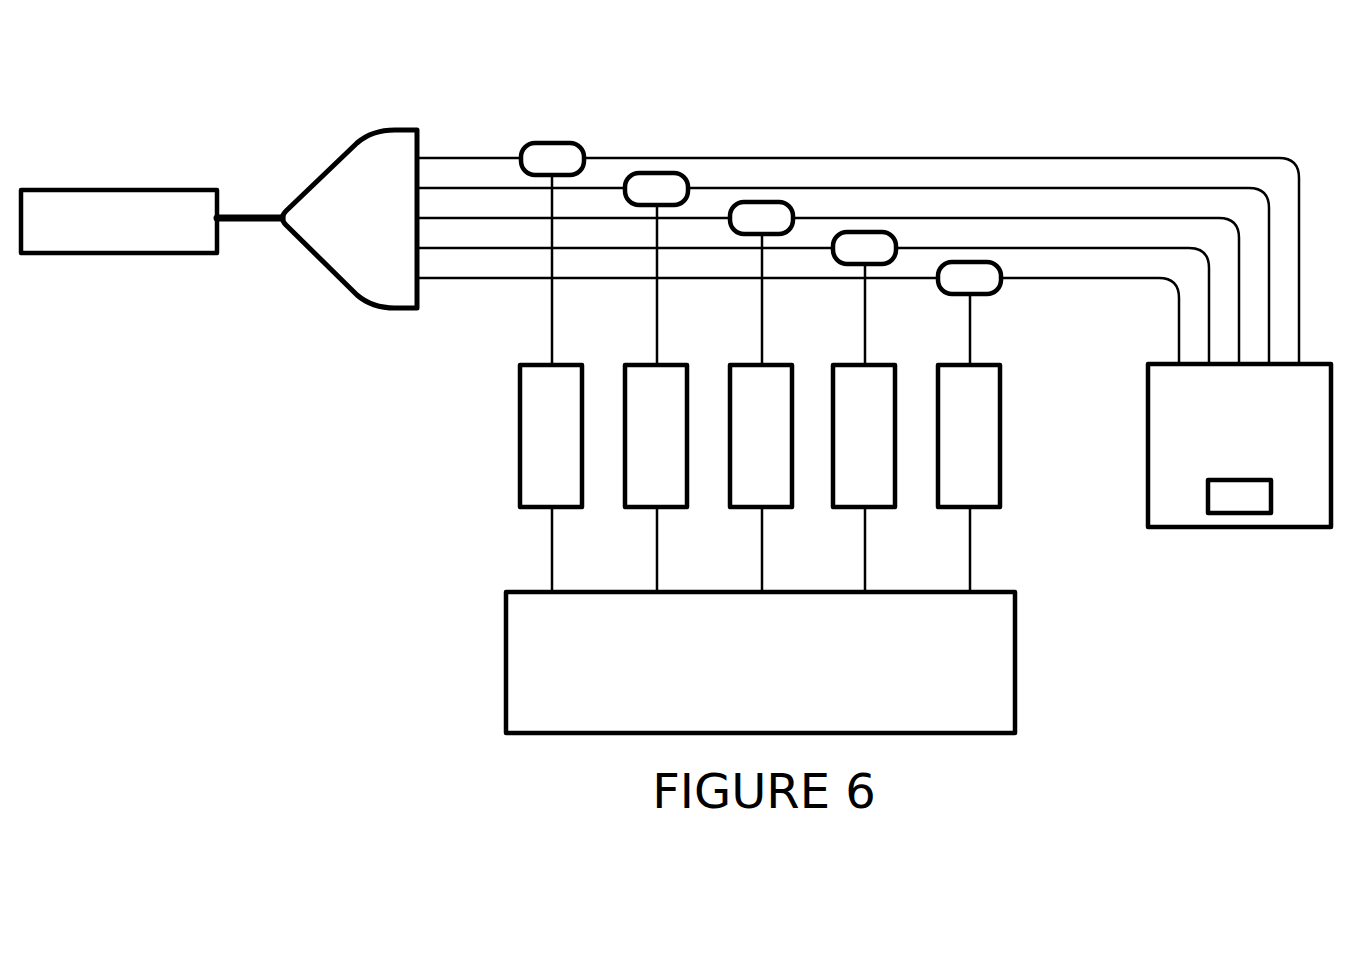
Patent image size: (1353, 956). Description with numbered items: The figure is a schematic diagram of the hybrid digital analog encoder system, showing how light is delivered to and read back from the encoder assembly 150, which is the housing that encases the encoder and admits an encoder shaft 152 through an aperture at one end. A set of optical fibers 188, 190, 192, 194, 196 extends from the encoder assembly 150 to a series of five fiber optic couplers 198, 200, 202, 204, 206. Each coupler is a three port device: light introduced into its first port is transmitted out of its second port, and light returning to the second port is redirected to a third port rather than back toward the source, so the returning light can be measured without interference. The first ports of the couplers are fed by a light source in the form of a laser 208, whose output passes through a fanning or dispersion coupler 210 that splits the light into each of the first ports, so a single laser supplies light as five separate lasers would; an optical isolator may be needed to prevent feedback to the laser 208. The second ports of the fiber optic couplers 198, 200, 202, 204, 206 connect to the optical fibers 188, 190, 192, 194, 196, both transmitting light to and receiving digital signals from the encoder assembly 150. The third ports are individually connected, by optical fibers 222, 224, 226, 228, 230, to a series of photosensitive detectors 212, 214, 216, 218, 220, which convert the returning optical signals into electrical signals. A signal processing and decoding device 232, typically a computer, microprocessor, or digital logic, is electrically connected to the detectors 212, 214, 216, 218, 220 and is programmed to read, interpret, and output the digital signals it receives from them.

The housing 150 is at (1182, 498).
The encoder shaft 152 is at (1236, 501).
The optical fiber 188 is at (1025, 276).
The optical fiber 190 is at (1075, 246).
The optical fiber 192 is at (1136, 216).
The optical fiber 194 is at (1200, 187).
The optical fiber 196 is at (1266, 157).
The fiber optic coupler 198 is at (972, 275).
The fiber optic coupler 200 is at (866, 246).
The fiber optic coupler 202 is at (766, 215).
The fiber optic coupler 204 is at (662, 187).
The fiber optic coupler 206 is at (562, 157).
The laser 208 is at (132, 207).
The dispersion coupler 210 is at (352, 188).
The photosensitive detector 212 is at (956, 469).
The photosensitive detector 214 is at (851, 469).
The photosensitive detector 216 is at (748, 469).
The photosensitive detector 218 is at (643, 469).
The photosensitive detector 220 is at (538, 469).
The optical fiber 222 is at (970, 332).
The optical fiber 224 is at (865, 332).
The optical fiber 226 is at (762, 332).
The optical fiber 228 is at (657, 332).
The optical fiber 230 is at (552, 332).
The signal processing and decoding device 232 is at (550, 675).